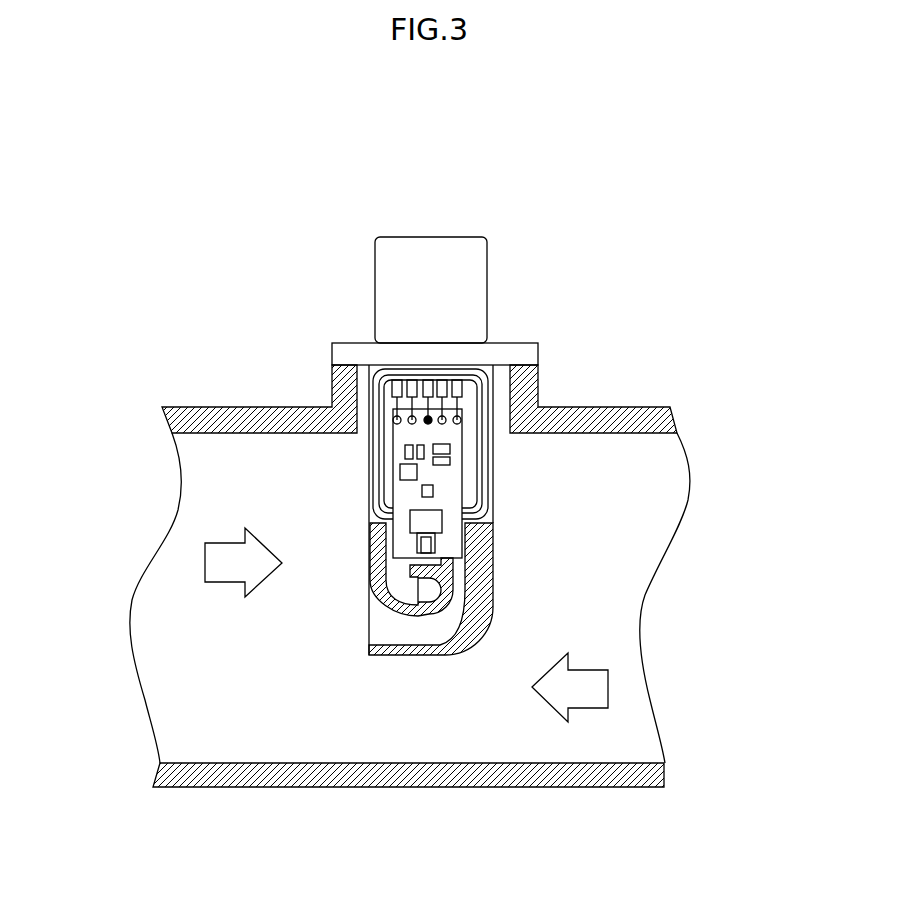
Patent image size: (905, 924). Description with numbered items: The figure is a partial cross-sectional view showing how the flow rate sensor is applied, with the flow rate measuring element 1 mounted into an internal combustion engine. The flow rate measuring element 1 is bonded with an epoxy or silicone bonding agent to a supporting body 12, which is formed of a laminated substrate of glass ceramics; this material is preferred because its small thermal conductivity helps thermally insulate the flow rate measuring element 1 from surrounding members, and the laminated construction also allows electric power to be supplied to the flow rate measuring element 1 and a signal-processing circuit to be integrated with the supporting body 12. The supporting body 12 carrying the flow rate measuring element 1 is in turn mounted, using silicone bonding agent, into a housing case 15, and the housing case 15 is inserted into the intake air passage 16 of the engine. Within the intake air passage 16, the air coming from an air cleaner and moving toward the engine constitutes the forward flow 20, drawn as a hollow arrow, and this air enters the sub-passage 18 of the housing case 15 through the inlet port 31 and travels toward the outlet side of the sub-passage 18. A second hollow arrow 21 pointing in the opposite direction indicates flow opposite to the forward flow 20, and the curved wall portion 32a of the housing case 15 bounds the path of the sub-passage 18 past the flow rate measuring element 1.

The flow rate measuring element 1 is at (433, 553).
The supporting body 12 is at (402, 522).
The housing case 15 is at (493, 498).
The intake air passage 16 is at (672, 498).
The sub-passage 18 is at (468, 577).
The forward flow 20 is at (222, 565).
The reverse air flow 21 is at (597, 687).
The inlet port 31 is at (390, 627).
The curved bypass passage wall 32a is at (428, 590).